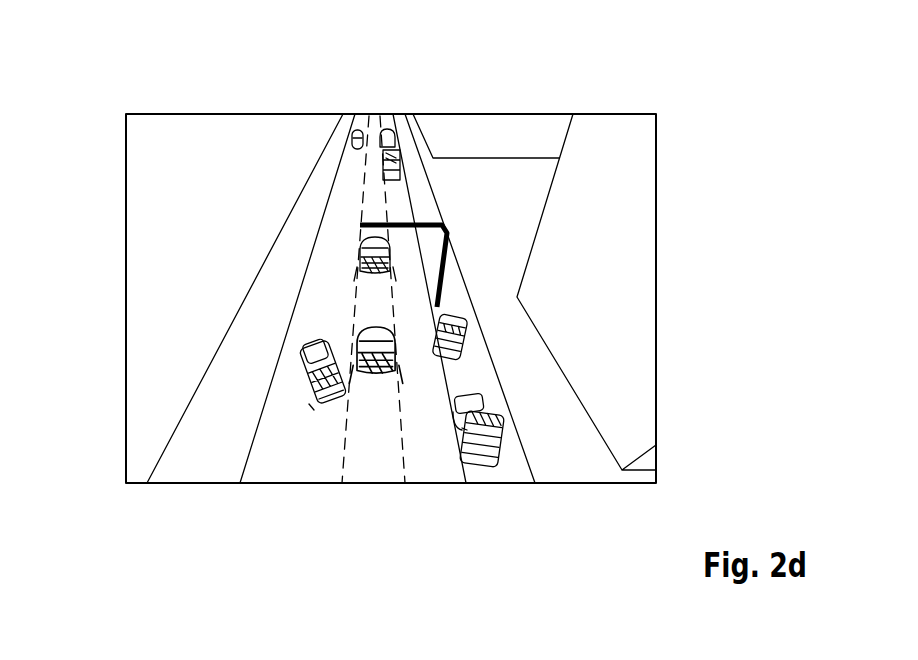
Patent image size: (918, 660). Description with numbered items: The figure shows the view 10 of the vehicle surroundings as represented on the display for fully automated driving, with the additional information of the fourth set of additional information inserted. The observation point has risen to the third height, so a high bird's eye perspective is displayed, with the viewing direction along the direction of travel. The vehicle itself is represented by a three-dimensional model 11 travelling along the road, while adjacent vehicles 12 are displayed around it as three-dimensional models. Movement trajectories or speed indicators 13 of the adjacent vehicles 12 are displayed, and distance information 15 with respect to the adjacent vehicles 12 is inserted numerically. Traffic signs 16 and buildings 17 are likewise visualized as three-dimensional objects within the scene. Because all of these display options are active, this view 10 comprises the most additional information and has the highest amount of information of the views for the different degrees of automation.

The view 10 is at (656, 208).
The three-dimensional model 11 is at (370, 375).
The adjacent vehicles 12 is at (465, 320).
The movement trajectories or speed indicators 13 is at (320, 343).
The distance information 15 is at (313, 410).
The traffic signs 16 is at (447, 233).
The buildings 17 is at (478, 148).